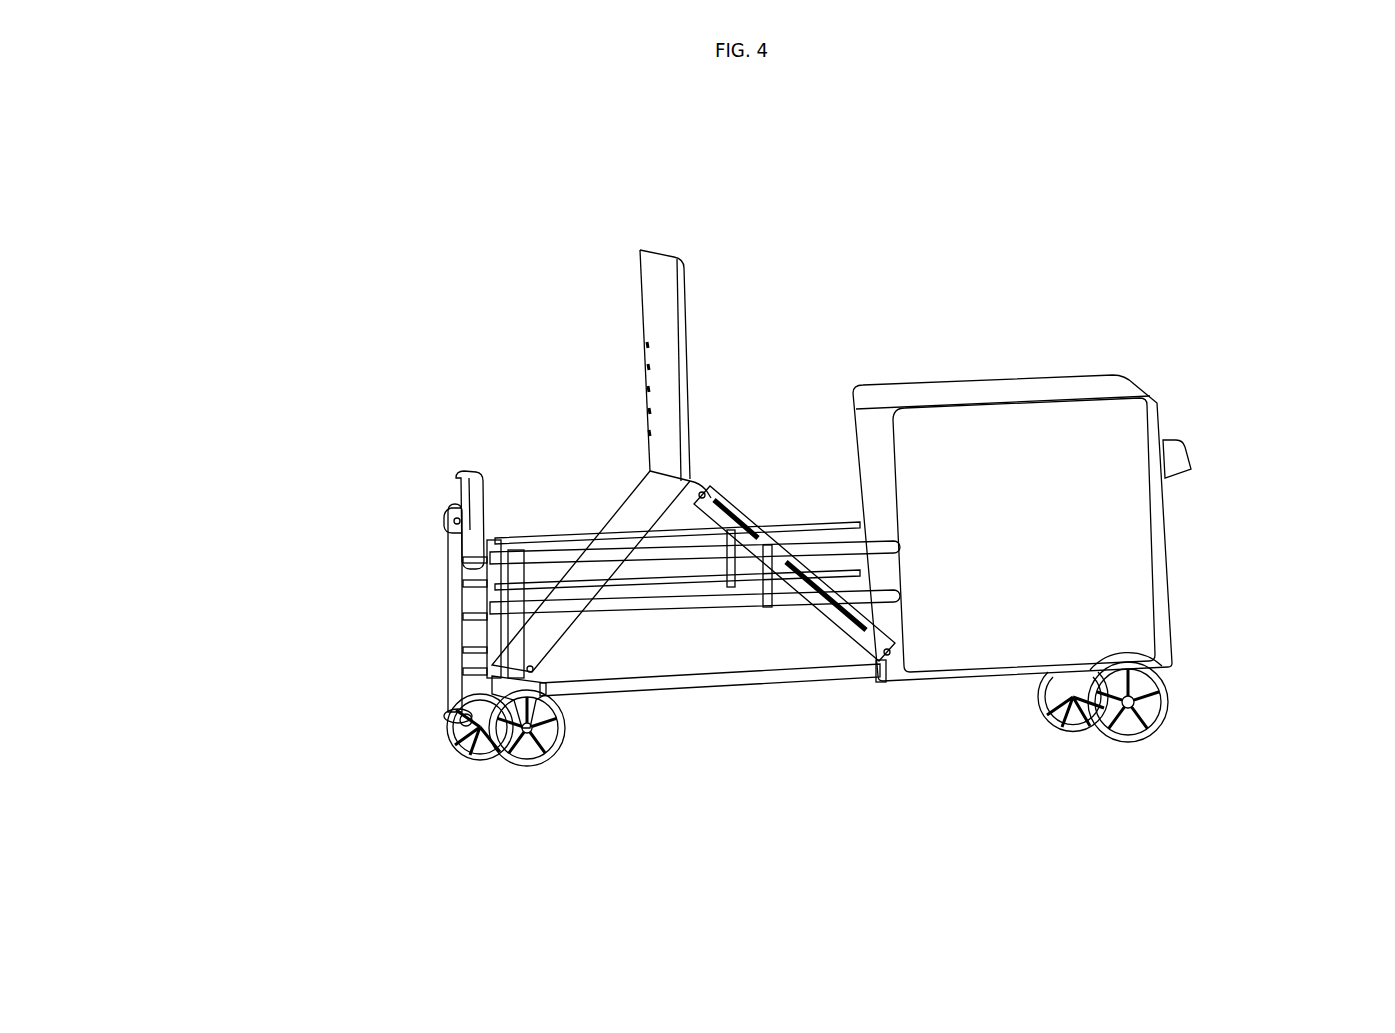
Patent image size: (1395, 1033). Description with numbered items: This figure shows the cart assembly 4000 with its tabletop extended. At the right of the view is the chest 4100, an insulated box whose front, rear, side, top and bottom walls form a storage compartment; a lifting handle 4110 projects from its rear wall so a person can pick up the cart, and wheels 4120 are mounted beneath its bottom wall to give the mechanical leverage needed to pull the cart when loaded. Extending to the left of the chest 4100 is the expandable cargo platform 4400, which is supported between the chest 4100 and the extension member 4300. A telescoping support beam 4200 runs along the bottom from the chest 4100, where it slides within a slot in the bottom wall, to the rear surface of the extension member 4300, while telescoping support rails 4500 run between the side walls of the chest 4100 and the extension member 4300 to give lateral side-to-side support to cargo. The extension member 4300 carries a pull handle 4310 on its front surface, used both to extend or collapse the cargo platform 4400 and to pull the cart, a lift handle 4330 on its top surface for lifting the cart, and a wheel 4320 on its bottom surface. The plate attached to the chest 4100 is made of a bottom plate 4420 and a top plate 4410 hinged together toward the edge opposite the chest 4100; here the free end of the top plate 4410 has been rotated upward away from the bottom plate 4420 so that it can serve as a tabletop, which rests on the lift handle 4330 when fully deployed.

The cart assembly 4000 is at (739, 438).
The top plate 4410 is at (684, 258).
The cargo platform 4400 is at (538, 489).
The bottom plate 4420 is at (762, 516).
The chest 4100 is at (1060, 507).
The telescoping support rails 4500 is at (597, 498).
The lifting handle 4110 is at (1270, 459).
The lift handle 4330 is at (353, 520).
The extension member 4300 is at (312, 609).
The pull handle 4310 is at (350, 615).
The telescoping support beam 4200 is at (713, 689).
The wheels 4120 is at (1164, 717).
The wheel 4320 is at (557, 741).